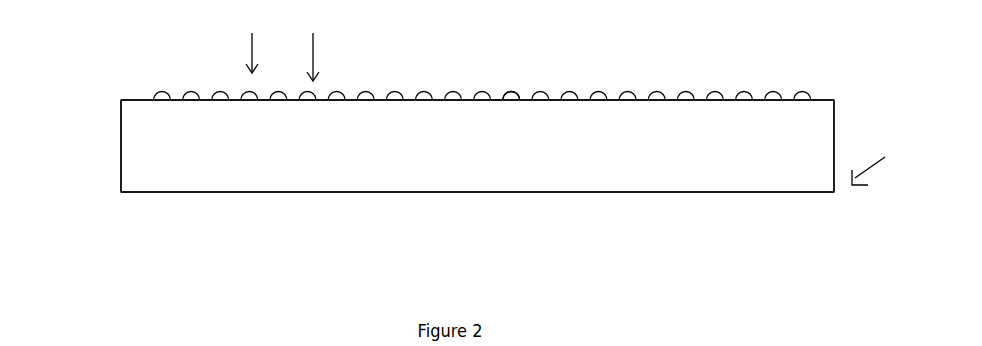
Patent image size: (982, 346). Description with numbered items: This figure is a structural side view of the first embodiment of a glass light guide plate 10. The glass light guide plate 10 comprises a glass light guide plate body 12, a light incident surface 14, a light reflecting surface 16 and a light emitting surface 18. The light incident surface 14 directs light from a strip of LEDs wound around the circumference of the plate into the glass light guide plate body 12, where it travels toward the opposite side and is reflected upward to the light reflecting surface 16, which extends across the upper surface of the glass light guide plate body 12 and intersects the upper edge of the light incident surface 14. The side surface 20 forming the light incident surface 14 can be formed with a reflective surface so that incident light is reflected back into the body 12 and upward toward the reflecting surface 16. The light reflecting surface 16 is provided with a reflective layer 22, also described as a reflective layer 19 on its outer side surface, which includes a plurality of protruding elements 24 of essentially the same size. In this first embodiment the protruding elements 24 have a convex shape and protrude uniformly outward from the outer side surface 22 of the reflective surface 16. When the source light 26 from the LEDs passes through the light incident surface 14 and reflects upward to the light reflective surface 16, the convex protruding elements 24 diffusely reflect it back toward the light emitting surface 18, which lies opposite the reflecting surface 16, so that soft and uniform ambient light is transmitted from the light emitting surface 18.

The glass light guide plate 10 is at (312, 48).
The glass light guide plate body 12 is at (562, 168).
The light incident surface 14 is at (837, 138).
The light reflecting surface 16 is at (672, 98).
The light emitting surface 18 is at (153, 195).
The reflective layer 19 is at (251, 44).
The side surface 20 is at (121, 148).
The reflective layer 22 is at (824, 99).
The protruding elements 24 is at (513, 95).
The source light 26 is at (881, 162).